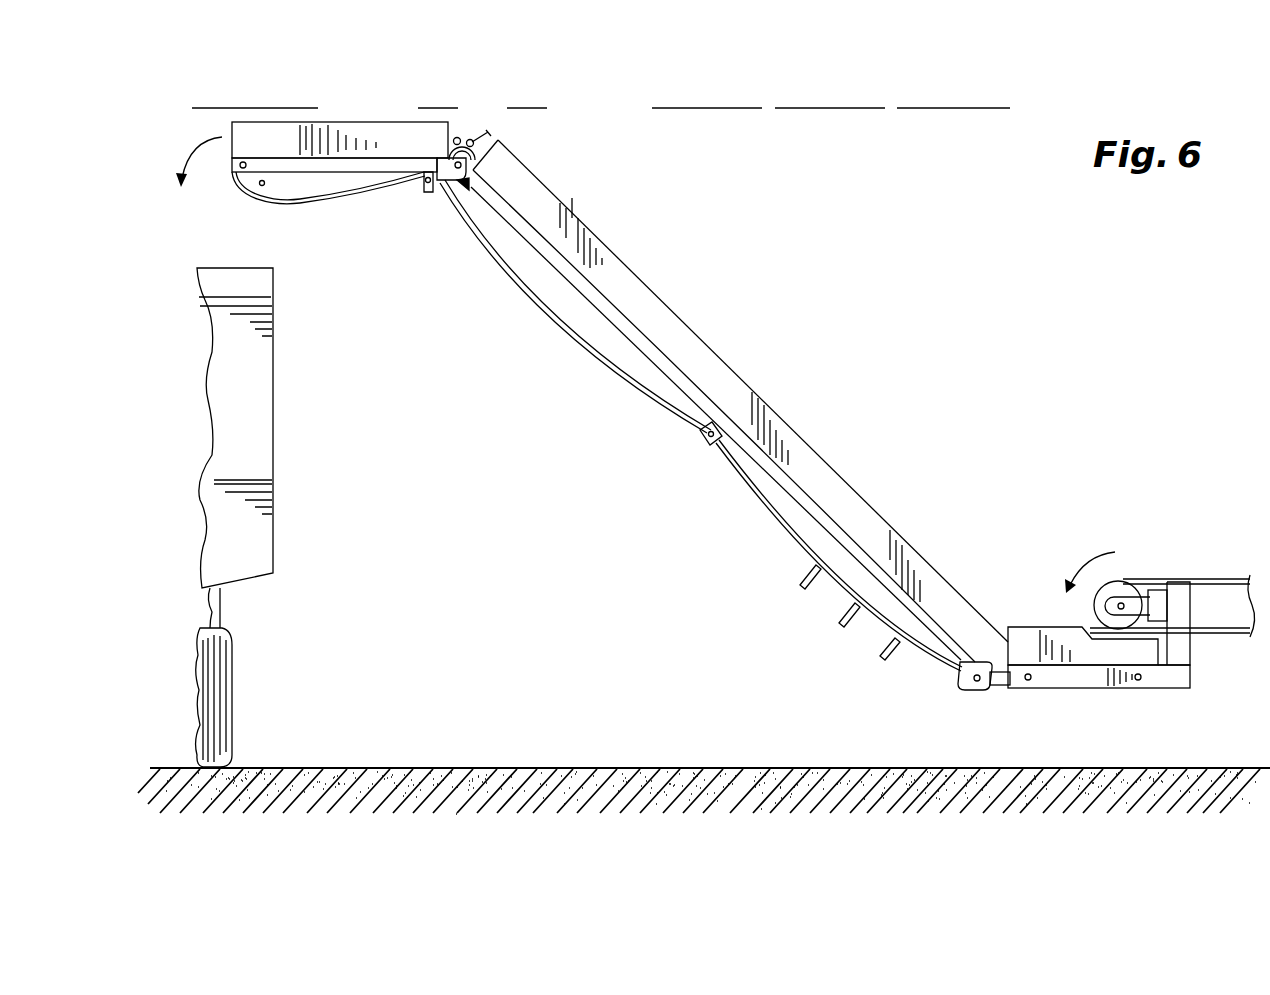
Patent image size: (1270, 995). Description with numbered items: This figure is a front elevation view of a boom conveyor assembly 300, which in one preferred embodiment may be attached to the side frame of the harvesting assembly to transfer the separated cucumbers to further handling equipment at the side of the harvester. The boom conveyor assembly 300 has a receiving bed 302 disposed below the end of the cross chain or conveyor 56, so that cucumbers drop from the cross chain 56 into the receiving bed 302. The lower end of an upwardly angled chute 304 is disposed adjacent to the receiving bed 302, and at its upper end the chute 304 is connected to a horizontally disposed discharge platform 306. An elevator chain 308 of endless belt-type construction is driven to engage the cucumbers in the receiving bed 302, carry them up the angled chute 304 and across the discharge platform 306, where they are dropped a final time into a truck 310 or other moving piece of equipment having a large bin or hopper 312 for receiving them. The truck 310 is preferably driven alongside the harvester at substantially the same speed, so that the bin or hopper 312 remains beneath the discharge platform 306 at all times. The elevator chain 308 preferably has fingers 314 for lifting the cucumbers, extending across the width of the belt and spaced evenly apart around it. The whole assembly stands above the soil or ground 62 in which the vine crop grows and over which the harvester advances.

The boom conveyor assembly 300 is at (886, 290).
The receiving bed 302 is at (1045, 627).
The upwardly angled chute 304 is at (735, 371).
The discharge platform 306 is at (394, 121).
The elevator chain 308 is at (465, 140).
The truck 310 is at (300, 490).
The bin or hopper 312 is at (273, 376).
The fingers 314 is at (486, 138).
The cross chain or conveyor 56 is at (1162, 580).
The soil or ground 62 is at (430, 768).